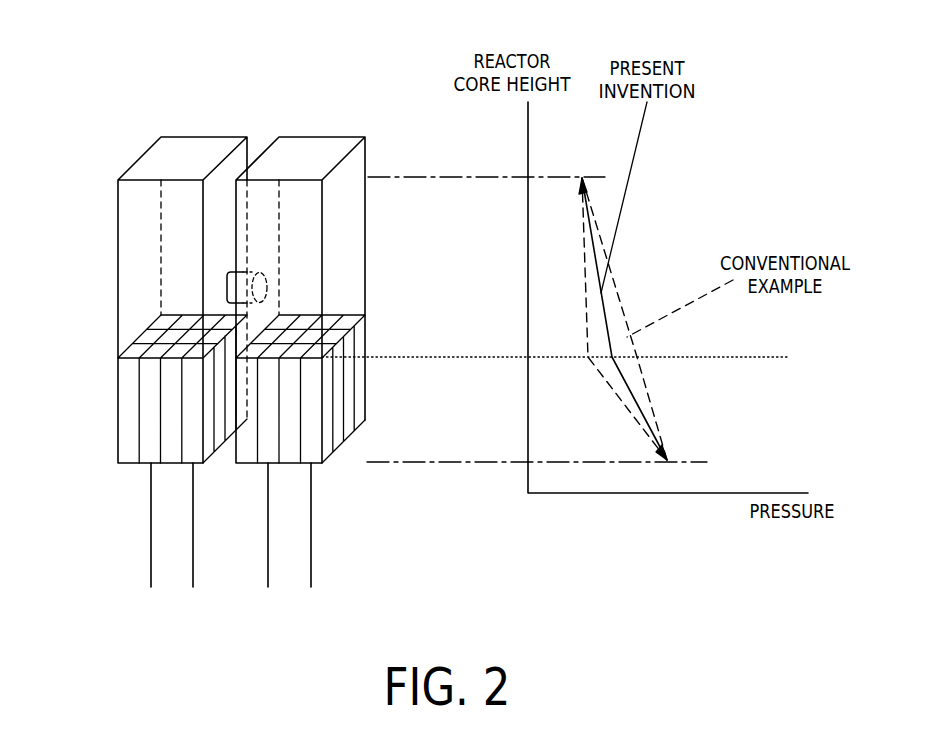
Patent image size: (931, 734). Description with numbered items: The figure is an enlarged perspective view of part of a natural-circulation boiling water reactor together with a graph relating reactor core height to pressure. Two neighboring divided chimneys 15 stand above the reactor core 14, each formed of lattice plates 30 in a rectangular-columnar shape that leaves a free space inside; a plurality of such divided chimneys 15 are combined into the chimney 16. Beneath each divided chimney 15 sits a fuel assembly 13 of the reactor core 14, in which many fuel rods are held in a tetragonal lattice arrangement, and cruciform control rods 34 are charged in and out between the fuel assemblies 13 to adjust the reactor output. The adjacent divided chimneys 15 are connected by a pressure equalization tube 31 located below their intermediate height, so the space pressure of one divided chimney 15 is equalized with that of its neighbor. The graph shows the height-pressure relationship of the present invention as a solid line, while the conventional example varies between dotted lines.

The fuel assembly 13 is at (162, 423).
The reactor core 14 is at (377, 323).
The divided chimney 15 is at (203, 137).
The chimney 16 is at (247, 67).
The lattice plate 30 is at (138, 272).
The pressure equalization tube 31 is at (238, 272).
The control rod 34 is at (193, 557).